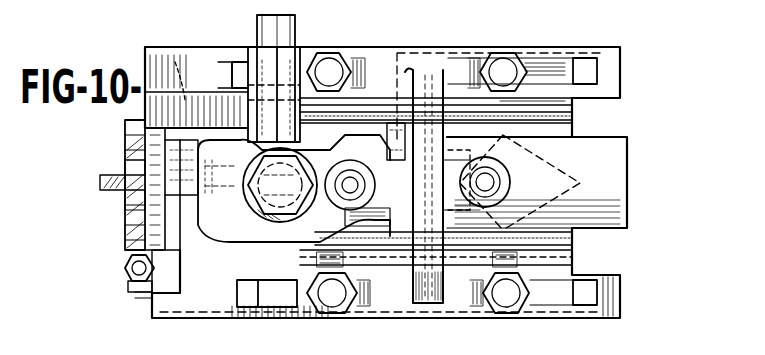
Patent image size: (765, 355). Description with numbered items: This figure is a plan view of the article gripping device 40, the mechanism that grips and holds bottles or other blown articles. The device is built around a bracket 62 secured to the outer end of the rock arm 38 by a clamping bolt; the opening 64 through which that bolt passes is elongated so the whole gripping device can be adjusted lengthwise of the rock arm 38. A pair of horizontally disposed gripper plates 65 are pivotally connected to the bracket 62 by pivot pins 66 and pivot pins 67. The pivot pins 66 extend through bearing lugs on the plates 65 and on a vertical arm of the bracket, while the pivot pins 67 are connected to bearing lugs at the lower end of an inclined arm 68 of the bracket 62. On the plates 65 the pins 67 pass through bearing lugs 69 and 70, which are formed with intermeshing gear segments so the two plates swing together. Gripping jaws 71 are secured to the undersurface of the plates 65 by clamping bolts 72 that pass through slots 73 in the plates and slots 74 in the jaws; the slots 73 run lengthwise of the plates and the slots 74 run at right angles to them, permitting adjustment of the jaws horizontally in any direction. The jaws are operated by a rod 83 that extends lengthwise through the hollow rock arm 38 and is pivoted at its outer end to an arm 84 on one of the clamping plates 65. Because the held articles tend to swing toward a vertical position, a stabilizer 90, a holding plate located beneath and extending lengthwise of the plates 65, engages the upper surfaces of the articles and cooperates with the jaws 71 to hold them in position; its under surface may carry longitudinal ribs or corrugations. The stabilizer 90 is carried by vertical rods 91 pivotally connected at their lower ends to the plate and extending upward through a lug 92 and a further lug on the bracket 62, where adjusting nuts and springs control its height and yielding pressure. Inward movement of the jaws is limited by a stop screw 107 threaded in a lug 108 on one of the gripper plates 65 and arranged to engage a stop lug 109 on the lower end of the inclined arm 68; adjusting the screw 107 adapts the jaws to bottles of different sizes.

The rock arm 38 is at (248, 45).
The article gripping device 40 is at (441, 324).
The bracket 62 is at (248, 240).
The opening 64 is at (252, 170).
The gripper plates 65 is at (418, 47).
The pivot pins 66 is at (387, 143).
The pivot pins 67 is at (125, 143).
The inclined arm 68 is at (215, 215).
The bearing lug 69 is at (125, 165).
The bearing lug 70 is at (125, 200).
The gripping jaws 71 is at (572, 122).
The clamping bolts 72 is at (330, 56).
The slots 73 is at (237, 58).
The slots 74 is at (340, 103).
The rod 83 is at (283, 20).
The arm 84 is at (187, 100).
The stabilizer 90 is at (627, 166).
The vertical rods 91 is at (488, 182).
The lug 92 is at (492, 190).
The stop screw 107 is at (125, 268).
The lug 108 is at (128, 283).
The stop lug 109 is at (135, 295).